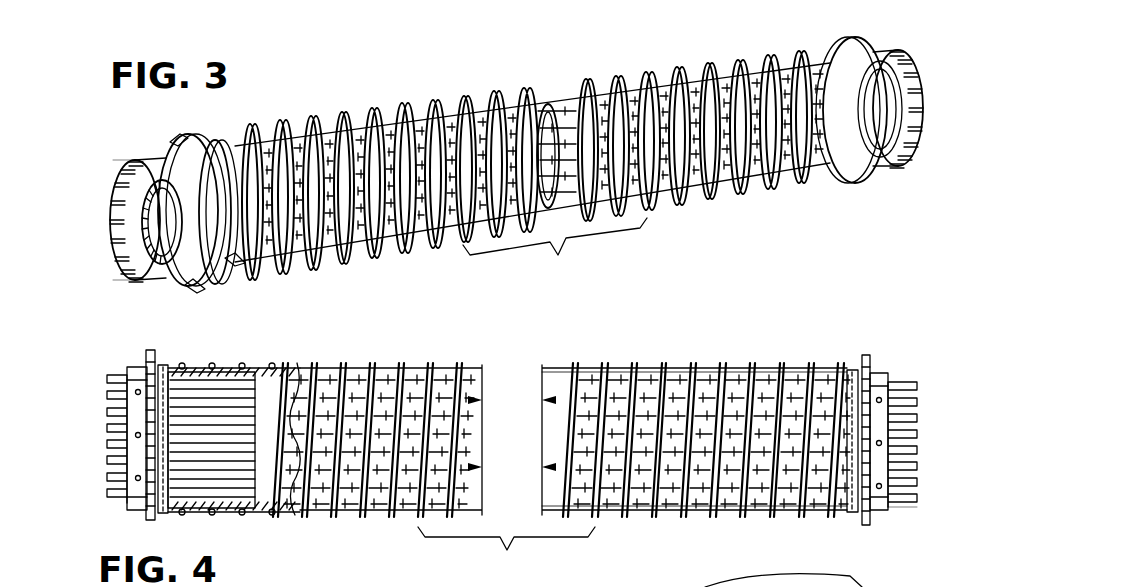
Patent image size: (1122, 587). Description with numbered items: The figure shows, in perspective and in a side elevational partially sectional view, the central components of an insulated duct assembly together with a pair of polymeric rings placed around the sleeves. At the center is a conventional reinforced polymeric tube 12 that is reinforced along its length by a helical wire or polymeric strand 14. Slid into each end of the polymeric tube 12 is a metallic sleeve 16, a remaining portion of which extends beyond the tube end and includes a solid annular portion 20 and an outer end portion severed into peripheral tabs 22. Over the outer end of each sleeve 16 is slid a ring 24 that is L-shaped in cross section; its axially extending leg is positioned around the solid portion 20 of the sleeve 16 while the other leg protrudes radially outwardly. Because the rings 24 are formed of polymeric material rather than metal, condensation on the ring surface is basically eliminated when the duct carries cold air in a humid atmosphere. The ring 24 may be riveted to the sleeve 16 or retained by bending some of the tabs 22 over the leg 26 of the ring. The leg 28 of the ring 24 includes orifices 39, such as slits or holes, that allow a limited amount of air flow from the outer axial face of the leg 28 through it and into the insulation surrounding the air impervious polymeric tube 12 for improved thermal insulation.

In FIG. 3, the reinforced polymeric tube 12 is at (600, 92).
In FIG. 4, the reinforced polymeric tube 12 is at (618, 368).
In FIG. 3, the helical wire or polymeric strand 14 is at (690, 72).
In FIG. 4, the helical wire or polymeric strand 14 is at (688, 368).
In FIG. 3, the metallic sleeve 16 is at (172, 286).
In FIG. 4, the metallic sleeve 16 is at (895, 515).
In FIG. 4, the solid annular portion 20 is at (222, 470).
In FIG. 3, the peripheral tabs 22 is at (113, 200).
In FIG. 4, the peripheral tabs 22 is at (110, 386).
In FIG. 3, the ring 24 is at (212, 138).
In FIG. 4, the ring 24 is at (125, 507).
In FIG. 3, the leg of the ring 26 is at (164, 163).
In FIG. 4, the leg of the ring 26 is at (886, 376).
In FIG. 3, the leg of the ring 28 is at (186, 140).
In FIG. 4, the leg of the ring 28 is at (862, 355).
In FIG. 3, the orifices 39 is at (190, 296).